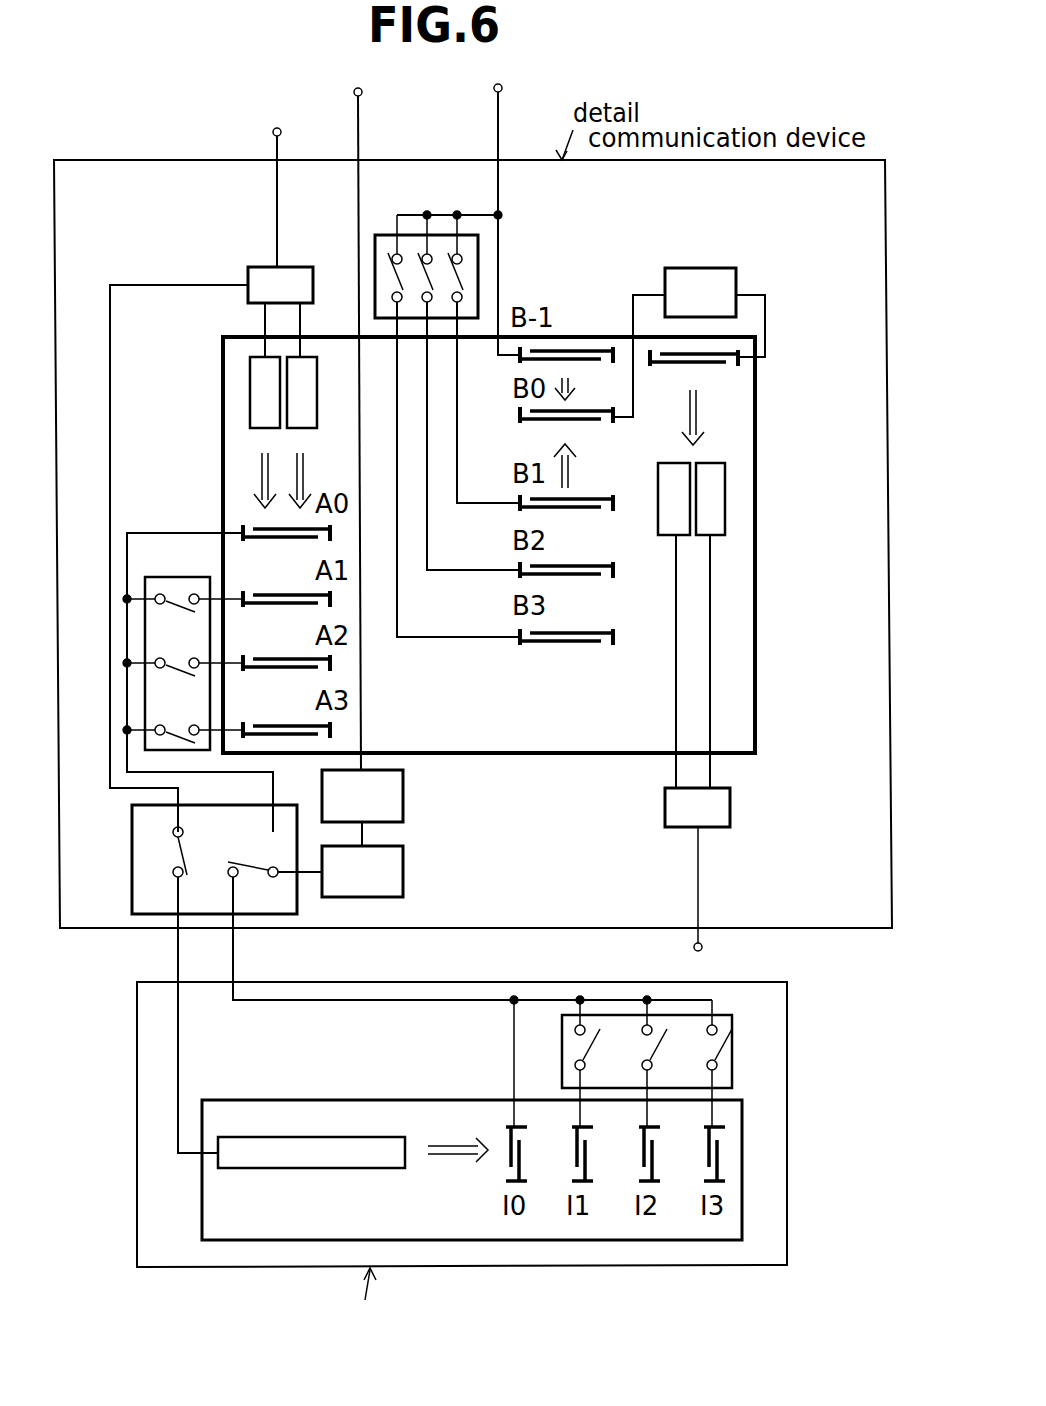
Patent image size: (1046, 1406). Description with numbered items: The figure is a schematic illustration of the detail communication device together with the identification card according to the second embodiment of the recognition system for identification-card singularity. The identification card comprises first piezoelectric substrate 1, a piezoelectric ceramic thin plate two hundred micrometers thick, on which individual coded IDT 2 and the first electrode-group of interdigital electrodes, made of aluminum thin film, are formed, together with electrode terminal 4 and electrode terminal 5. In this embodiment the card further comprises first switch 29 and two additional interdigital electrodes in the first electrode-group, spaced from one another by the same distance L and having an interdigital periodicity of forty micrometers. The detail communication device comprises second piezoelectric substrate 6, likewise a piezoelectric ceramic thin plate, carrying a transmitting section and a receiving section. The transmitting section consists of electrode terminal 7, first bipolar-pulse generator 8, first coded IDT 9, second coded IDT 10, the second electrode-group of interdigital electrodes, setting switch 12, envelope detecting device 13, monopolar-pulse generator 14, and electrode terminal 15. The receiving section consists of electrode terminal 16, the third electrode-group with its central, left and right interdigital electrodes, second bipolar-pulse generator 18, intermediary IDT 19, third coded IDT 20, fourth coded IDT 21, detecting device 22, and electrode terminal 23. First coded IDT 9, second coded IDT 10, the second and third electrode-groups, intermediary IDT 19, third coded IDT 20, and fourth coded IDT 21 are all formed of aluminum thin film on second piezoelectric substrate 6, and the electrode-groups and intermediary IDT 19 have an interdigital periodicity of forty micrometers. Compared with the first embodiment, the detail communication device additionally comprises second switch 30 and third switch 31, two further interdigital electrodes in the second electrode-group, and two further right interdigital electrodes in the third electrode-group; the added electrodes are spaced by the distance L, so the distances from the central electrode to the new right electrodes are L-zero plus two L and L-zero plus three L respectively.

The first piezoelectric substrate 1 is at (462, 1157).
The individual coded IDT 2 is at (361, 1108).
The electrode terminal 4 is at (184, 990).
The electrode terminal 5 is at (459, 931).
The second piezoelectric substrate 6 is at (511, 545).
The electrode terminal 7 is at (262, 192).
The first bipolar-pulse generator 8 is at (192, 499).
The first coded IDT 9 is at (212, 360).
The second coded IDT 10 is at (216, 438).
The setting switch 12 is at (422, 979).
The envelope detecting device 13 is at (489, 880).
The monopolar-pulse generator 14 is at (484, 807).
The electrode terminal 15 is at (334, 422).
The electrode terminal 16 is at (524, 215).
The second bipolar-pulse generator 18 is at (675, 304).
The intermediary IDT 19 is at (697, 397).
The third coded IDT 20 is at (758, 603).
The fourth coded IDT 21 is at (778, 625).
The detecting device 22 is at (756, 847).
The electrode terminal 23 is at (721, 895).
The first switch 29 is at (643, 1061).
The second switch 30 is at (198, 682).
The third switch 31 is at (416, 424).